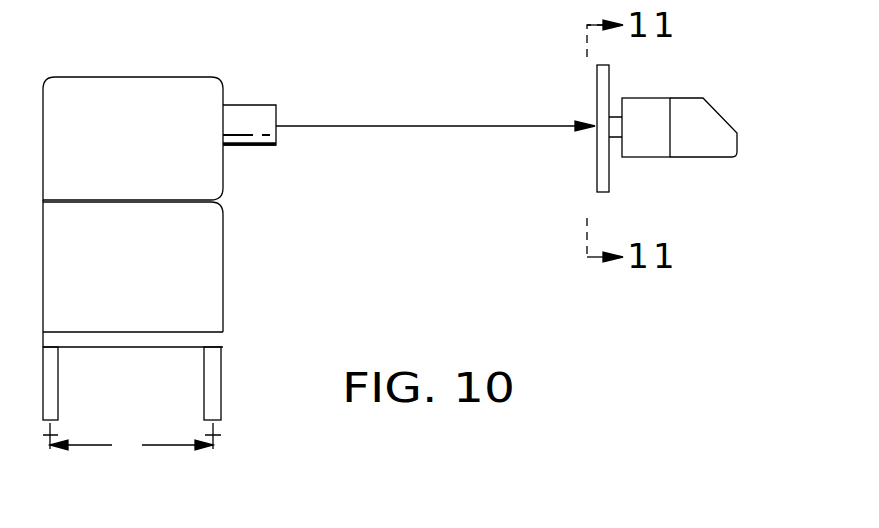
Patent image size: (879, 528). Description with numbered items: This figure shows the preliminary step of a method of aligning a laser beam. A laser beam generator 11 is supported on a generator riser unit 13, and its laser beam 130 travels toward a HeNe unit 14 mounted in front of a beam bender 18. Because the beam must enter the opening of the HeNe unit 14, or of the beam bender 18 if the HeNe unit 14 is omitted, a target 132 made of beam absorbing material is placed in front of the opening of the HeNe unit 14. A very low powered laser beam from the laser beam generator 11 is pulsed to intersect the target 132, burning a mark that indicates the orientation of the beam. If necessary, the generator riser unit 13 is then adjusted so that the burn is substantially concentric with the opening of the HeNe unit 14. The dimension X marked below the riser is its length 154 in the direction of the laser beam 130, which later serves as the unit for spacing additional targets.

The laser beam generator 11 is at (167, 78).
The generator riser unit 13 is at (217, 405).
The HeNe unit 14 is at (647, 98).
The beam bender 18 is at (717, 110).
The laser beam 130 is at (437, 123).
The target 132 is at (595, 95).
The length of laser generator riser 154 is at (175, 447).